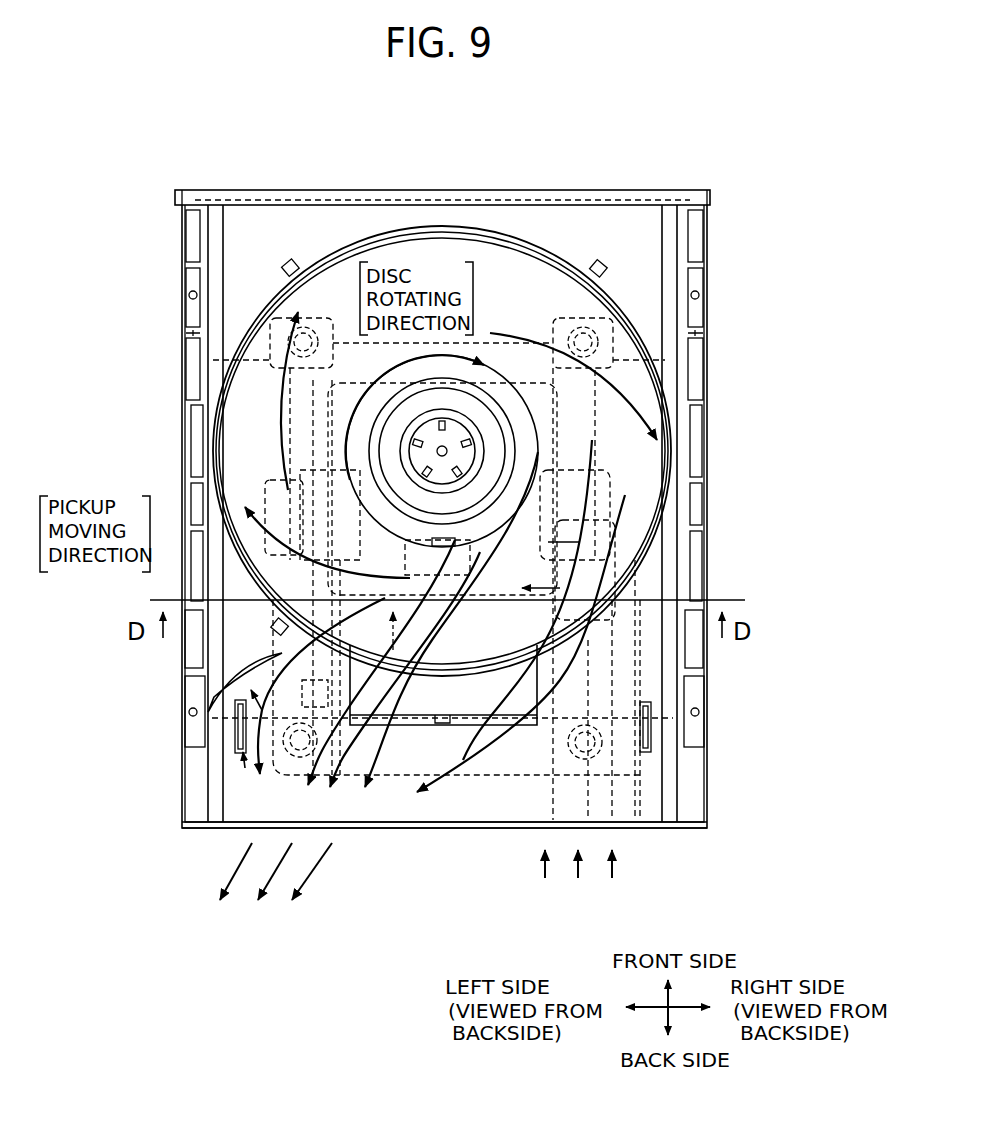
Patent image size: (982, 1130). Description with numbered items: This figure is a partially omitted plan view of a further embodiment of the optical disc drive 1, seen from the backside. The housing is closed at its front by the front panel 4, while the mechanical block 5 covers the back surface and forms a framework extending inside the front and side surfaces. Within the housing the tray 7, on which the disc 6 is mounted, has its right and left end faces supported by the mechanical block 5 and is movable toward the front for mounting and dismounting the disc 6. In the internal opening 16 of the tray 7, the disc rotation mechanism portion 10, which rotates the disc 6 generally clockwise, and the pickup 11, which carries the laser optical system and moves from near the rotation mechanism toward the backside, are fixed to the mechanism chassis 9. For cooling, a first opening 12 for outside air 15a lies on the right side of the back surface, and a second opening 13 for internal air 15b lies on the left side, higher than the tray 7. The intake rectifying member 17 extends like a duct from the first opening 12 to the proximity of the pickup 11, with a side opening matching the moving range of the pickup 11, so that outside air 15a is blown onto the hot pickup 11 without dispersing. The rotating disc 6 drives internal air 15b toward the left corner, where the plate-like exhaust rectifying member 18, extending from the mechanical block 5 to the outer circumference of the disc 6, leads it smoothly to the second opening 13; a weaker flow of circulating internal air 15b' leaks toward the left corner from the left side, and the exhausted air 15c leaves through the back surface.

The optical disc drive 1 is at (426, 146).
The front panel 4 is at (637, 195).
The mechanical block 5 is at (693, 327).
The disc 6 is at (508, 285).
The tray 7 is at (240, 257).
The mechanism chassis 9 is at (578, 423).
The disc rotation mechanism portion 10 is at (388, 446).
The pickup 11 is at (385, 552).
The first opening 12 is at (605, 828).
The second opening 13 is at (287, 825).
The outside air 15a is at (608, 875).
The internal air 15b is at (548, 562).
The circulating internal air 15b' is at (259, 543).
The air outlet flow 15c is at (260, 871).
The internal opening 16 is at (452, 695).
The intake rectifying member 17 is at (643, 667).
The exhaust rectifying member 18 is at (247, 678).